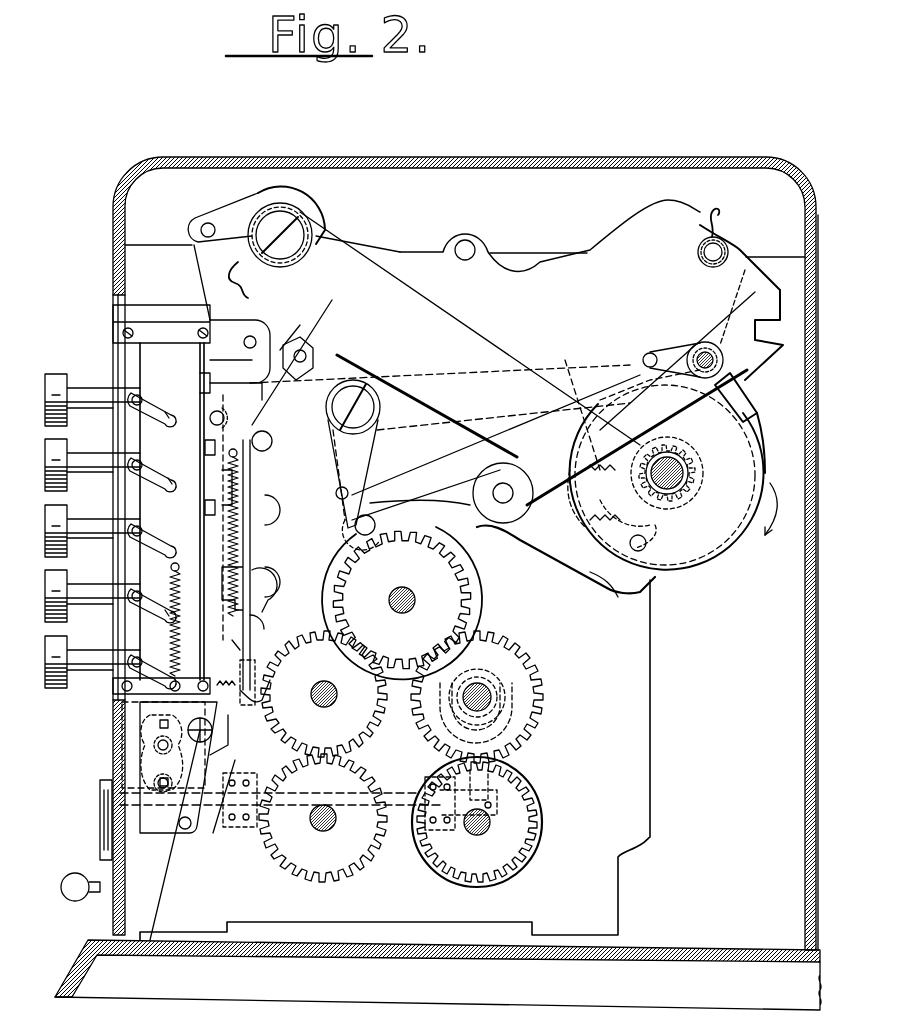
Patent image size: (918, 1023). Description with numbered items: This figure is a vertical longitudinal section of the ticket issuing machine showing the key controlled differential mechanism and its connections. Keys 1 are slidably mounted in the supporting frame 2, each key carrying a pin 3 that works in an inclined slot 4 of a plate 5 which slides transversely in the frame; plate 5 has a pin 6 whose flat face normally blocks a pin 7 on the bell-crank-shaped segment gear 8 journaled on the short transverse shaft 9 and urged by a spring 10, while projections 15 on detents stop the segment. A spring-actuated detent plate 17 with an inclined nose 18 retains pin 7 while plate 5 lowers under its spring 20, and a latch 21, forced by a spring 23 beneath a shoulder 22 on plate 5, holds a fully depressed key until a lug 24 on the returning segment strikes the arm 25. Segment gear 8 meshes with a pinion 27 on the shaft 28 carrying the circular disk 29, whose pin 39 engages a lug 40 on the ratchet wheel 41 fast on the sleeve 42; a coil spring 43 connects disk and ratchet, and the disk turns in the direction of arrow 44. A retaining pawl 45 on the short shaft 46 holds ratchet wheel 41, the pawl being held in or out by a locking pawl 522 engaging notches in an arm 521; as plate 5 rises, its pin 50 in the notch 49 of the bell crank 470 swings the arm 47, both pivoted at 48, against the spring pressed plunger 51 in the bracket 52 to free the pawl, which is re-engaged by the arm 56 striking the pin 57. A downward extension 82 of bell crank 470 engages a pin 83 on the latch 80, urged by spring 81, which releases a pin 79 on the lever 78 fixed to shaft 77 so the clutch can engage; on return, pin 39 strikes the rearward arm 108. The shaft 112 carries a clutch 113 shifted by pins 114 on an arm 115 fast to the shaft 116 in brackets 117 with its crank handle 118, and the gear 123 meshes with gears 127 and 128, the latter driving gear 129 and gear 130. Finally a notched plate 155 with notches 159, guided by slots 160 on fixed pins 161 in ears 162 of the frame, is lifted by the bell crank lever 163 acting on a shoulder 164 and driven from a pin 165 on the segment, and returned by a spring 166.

The key 1 is at (78, 458).
The supporting frame 2 is at (118, 316).
The pin 3 is at (137, 393).
The inclined slot 4 is at (170, 422).
The plate 5 is at (150, 430).
The pin 6 is at (210, 740).
The pin 7 is at (200, 738).
The segment gear 8 is at (460, 343).
The short transverse shaft 9 is at (292, 238).
The spring 10 is at (230, 226).
The projection 15 is at (282, 512).
The detent plate 17 is at (150, 732).
The inclined nose 18 is at (217, 835).
The spring 20 is at (175, 622).
The latch 21 is at (255, 575).
The shoulder 22 is at (225, 556).
The spring 23 is at (235, 730).
The lug 24 is at (268, 672).
The arm 25 is at (258, 698).
The pinion 27 is at (700, 470).
The shaft 28 is at (683, 485).
The circular disk 29 is at (762, 470).
The pin 39 is at (648, 544).
The lug 40 is at (615, 523).
The ratchet wheel 41 is at (760, 418).
The sleeve 42 is at (682, 463).
The coil spring 43 is at (655, 508).
The arrow 44 is at (776, 540).
The retaining pawl 45 is at (752, 398).
The short shaft 46 is at (700, 350).
The arm 47 is at (575, 382).
The pivot 48 is at (372, 410).
The notch 49 is at (214, 424).
The pin 50 is at (212, 413).
The spring pressed plunger 51 is at (622, 392).
The bracket 52 is at (722, 376).
The arm 56 is at (558, 452).
The pin 57 is at (647, 352).
The shaft 77 is at (500, 490).
The lever 78 is at (478, 527).
The pin 79 is at (378, 514).
The latch 80 is at (372, 548).
The spring 81 is at (355, 470).
The downward extension 82 is at (349, 493).
The pin 83 is at (380, 492).
The rearward arm 108 is at (618, 600).
The shaft 112 is at (487, 688).
The clutch 113 is at (492, 690).
The pins 114 is at (502, 697).
The arm 115 is at (492, 785).
The shaft 116 is at (100, 823).
The brackets 117 is at (238, 830).
The crank handle 118 is at (72, 901).
The gear 123 is at (520, 724).
The gear 127 is at (518, 822).
The gear 128 is at (462, 612).
The gear 129 is at (372, 716).
The gear 130 is at (296, 872).
The notched plate 155 is at (243, 494).
The notches 159 is at (217, 453).
The slots 160 is at (303, 355).
The fixed pins 161 is at (258, 340).
The ears 162 is at (248, 320).
The bell crank lever 163 is at (352, 362).
The shoulder 164 is at (312, 362).
The pin 165 is at (303, 345).
The spring 166 is at (227, 482).
The bell crank 470 is at (233, 390).
The arm 521 is at (737, 317).
The locking pawl 522 is at (752, 268).